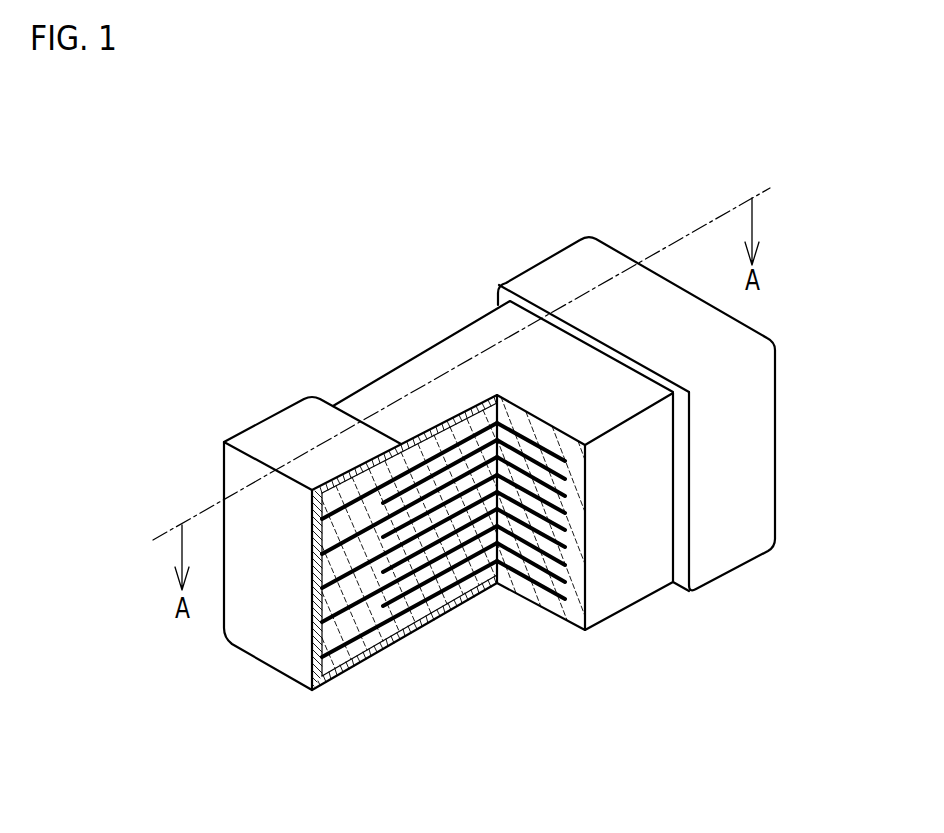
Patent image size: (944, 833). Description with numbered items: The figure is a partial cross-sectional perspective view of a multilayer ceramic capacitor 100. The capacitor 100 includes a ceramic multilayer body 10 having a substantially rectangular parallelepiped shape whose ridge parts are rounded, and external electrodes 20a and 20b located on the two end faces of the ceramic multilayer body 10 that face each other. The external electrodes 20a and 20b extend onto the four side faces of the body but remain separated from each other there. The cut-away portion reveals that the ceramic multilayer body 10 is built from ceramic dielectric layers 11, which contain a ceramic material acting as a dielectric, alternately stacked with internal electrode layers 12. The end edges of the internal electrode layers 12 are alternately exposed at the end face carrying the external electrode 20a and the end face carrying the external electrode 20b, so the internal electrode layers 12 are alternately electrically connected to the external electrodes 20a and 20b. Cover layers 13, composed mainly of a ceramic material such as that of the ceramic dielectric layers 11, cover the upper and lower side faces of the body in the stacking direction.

The multilayer ceramic capacitor 100 is at (867, 177).
The ceramic multilayer body 10 is at (346, 370).
The ceramic dielectric layer 11 is at (440, 629).
The internal electrode layer 12 is at (403, 628).
The cover layer 13 is at (469, 341).
The external electrode 20a is at (253, 427).
The external electrode 20b is at (549, 274).